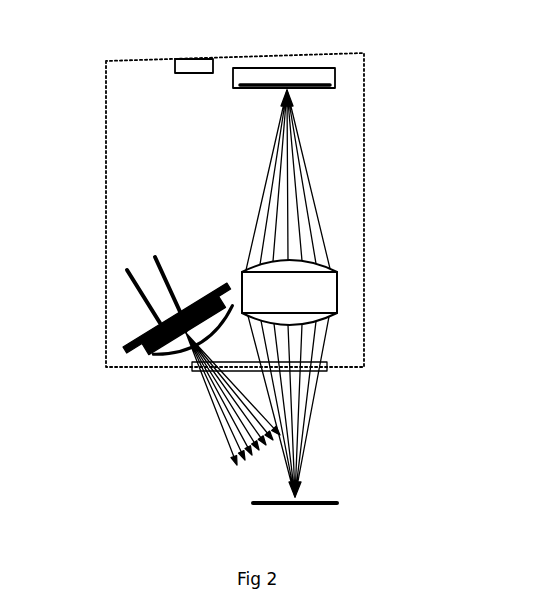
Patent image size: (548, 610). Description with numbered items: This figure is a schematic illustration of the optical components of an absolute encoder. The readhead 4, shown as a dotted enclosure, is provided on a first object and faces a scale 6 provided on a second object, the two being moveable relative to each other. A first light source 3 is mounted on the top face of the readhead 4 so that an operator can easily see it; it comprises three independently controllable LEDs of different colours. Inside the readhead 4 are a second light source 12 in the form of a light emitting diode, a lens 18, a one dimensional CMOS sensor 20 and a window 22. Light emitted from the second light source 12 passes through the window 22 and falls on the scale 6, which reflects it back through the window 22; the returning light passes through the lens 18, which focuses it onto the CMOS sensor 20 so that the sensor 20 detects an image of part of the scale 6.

The first light source 3 is at (190, 58).
The readhead 4 is at (362, 175).
The scale 6 is at (225, 507).
The second light source 12 is at (131, 323).
The lens 18 is at (374, 292).
The one dimensional CMOS sensor 20 is at (372, 72).
The window 22 is at (330, 371).